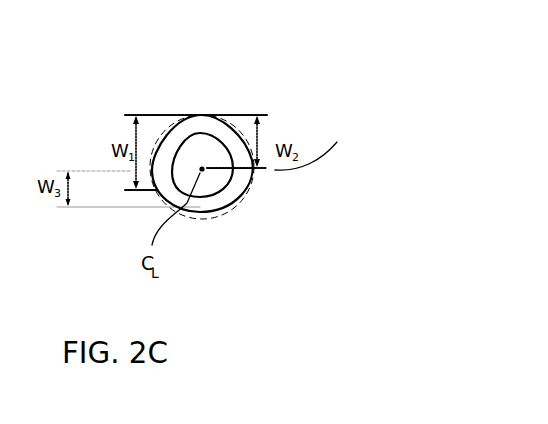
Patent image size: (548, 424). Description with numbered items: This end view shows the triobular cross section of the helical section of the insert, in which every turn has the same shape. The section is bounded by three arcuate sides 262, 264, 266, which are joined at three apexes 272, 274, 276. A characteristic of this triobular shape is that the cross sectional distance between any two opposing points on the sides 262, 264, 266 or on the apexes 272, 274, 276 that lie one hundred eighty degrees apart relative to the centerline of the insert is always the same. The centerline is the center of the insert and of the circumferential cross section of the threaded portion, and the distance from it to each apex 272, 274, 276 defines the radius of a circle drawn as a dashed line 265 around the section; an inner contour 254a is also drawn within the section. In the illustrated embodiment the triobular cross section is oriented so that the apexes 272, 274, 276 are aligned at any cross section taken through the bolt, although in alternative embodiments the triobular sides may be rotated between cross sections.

The central opening / core 254a is at (203, 128).
The arcuate side 262 is at (166, 126).
The arcuate side 264 is at (248, 143).
The circumscribed circle 265 is at (237, 205).
The arcuate side 266 is at (198, 212).
The apex 272 is at (201, 113).
The apex 274 is at (258, 196).
The apex 276 is at (160, 203).